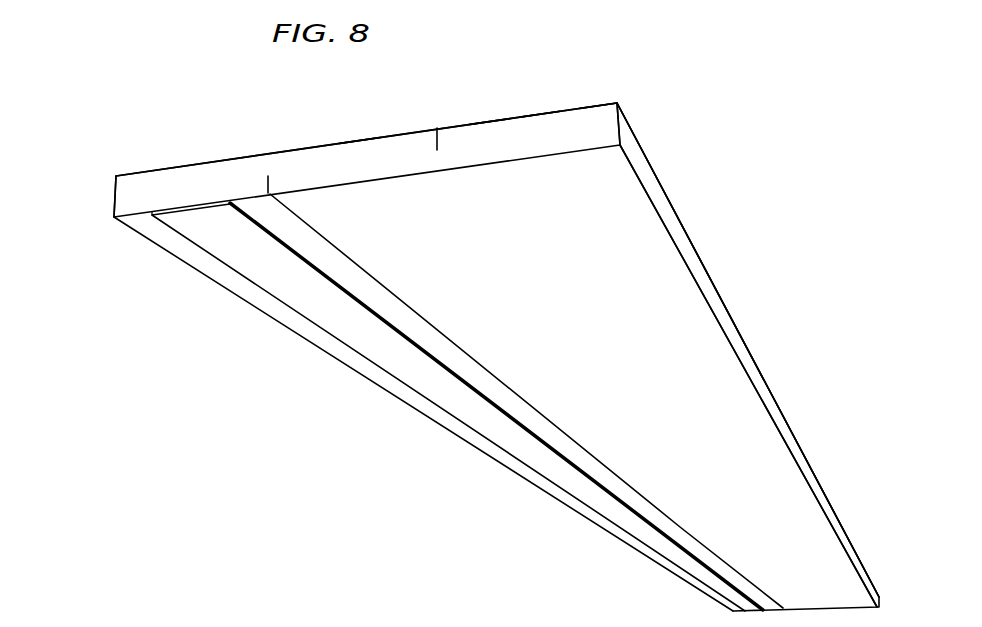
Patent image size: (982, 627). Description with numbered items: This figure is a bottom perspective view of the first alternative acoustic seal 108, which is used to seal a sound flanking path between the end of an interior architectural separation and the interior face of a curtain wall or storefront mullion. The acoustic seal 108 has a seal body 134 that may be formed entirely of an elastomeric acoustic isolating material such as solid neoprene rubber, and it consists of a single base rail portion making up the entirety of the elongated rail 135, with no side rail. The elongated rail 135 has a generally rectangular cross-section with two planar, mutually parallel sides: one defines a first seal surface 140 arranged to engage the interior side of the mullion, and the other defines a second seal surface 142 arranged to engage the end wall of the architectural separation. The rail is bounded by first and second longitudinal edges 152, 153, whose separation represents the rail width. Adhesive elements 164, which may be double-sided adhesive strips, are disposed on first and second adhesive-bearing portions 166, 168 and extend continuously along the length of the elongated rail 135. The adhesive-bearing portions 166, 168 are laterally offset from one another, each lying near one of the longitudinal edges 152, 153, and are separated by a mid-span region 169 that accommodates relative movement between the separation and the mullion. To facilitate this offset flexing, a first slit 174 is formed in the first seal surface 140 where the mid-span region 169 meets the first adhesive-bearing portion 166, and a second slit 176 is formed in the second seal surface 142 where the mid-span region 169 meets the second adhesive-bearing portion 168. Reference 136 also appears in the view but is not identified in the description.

The first alternative acoustic seal 108 is at (160, 109).
The second longitudinal edge 153 is at (115, 195).
The second adhesive-bearing portion 168 is at (185, 206).
The adhesive element 164 is at (192, 230).
The second slit 176 is at (264, 183).
The second seal surface 142 is at (607, 193).
The first seal surface 140 is at (310, 148).
The mid-span region 169 is at (357, 143).
The first slit 174 is at (437, 128).
The upper wall 136 is at (490, 127).
The seal body 134 is at (535, 112).
The first adhesive-bearing portion 166 is at (592, 103).
The first longitudinal edge 152 is at (683, 245).
The elongated rail 135 is at (732, 318).